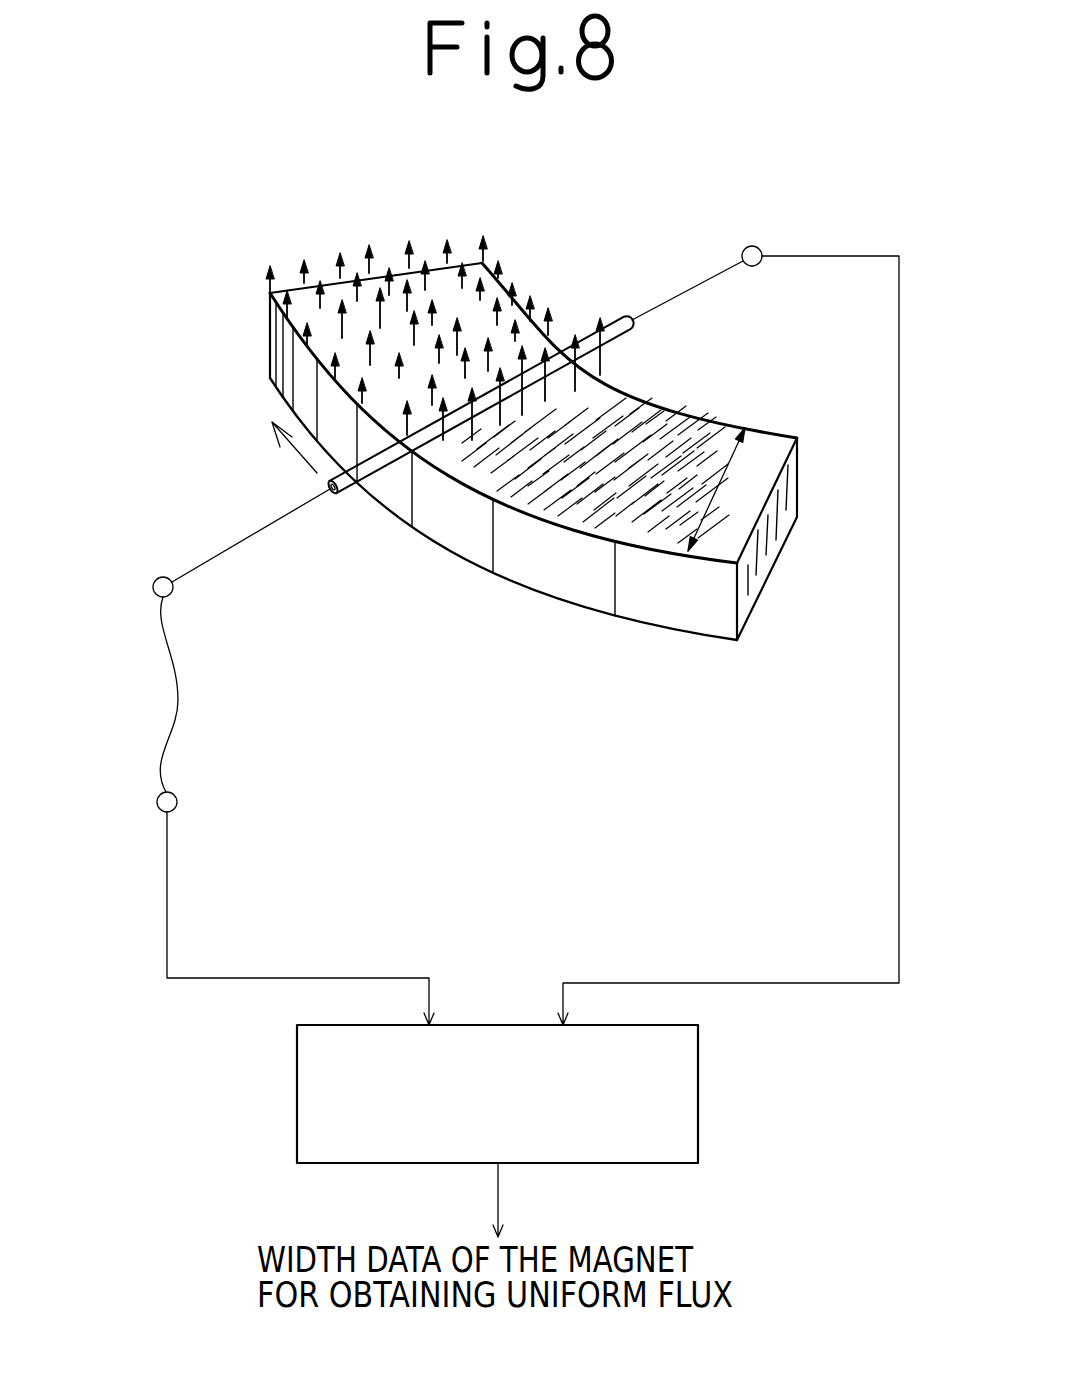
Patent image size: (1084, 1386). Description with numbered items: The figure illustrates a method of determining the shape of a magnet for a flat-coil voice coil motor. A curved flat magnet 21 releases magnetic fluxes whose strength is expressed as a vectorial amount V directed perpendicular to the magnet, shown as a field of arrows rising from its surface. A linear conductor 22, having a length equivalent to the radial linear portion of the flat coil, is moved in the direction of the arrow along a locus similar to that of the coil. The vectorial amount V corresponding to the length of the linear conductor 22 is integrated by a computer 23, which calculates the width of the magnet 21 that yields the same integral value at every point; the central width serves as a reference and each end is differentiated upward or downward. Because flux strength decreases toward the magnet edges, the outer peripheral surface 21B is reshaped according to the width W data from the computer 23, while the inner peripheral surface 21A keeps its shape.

The curved flat magnet 21 is at (533, 516).
The inner peripheral surface 21A is at (676, 408).
The outer peripheral surface 21B is at (524, 545).
The linear conductor 22 is at (376, 470).
The computer 23 is at (698, 1108).
The vectorial amount V is at (490, 237).
The width of the magnet W is at (710, 489).